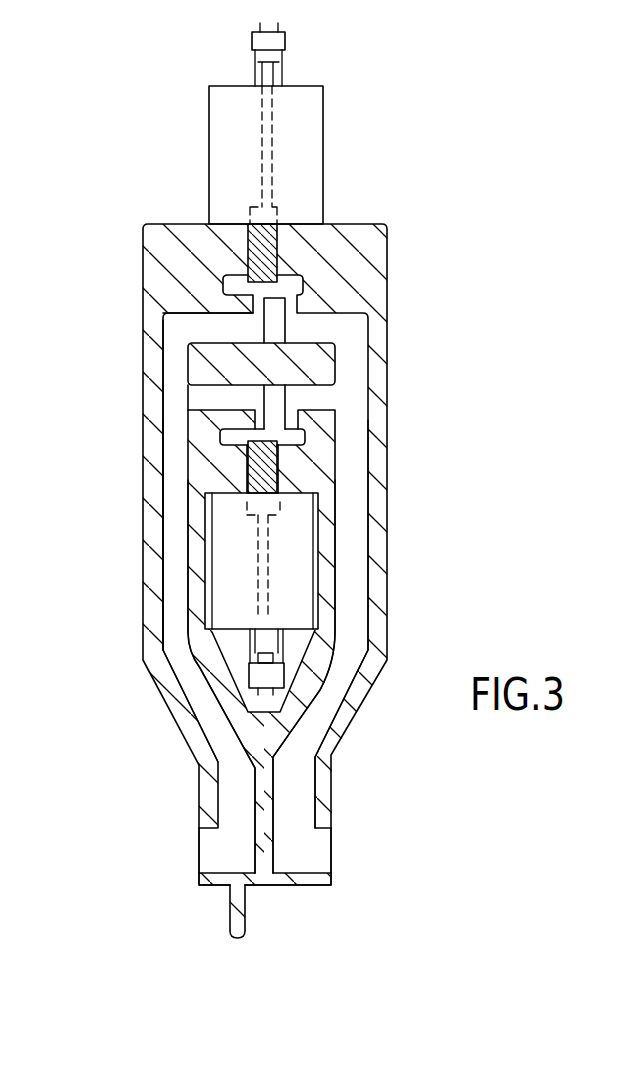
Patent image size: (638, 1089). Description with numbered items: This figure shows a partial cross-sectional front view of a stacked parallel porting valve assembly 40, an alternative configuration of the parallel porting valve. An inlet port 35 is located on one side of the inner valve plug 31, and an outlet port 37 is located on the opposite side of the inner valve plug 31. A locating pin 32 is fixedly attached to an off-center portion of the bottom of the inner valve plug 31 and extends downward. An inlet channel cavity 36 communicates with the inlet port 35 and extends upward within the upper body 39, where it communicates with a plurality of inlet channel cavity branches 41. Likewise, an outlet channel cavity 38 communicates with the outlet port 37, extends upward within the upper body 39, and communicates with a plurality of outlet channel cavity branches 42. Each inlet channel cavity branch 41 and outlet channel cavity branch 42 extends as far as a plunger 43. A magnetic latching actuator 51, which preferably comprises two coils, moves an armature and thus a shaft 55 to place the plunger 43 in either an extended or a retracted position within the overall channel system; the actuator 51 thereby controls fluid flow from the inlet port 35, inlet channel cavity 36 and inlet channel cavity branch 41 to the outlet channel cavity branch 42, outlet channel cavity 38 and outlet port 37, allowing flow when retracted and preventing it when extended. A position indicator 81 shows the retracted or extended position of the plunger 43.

The inner valve plug 31 is at (322, 808).
The locating pin 32 is at (240, 912).
The inlet port 35 is at (197, 855).
The inlet channel cavity 36 is at (175, 535).
The outlet port 37 is at (330, 848).
The outlet channel cavity 38 is at (352, 505).
The upper body 39 is at (367, 268).
The stacked parallel porting valve assembly 40 is at (103, 464).
The inlet channel cavity branch 41 is at (218, 327).
The outlet channel cavity branch 42 is at (318, 331).
The plunger 43 is at (257, 243).
The magnetic latching actuator 51 is at (313, 148).
The shaft 55 is at (272, 108).
The position indicator 81 is at (288, 44).